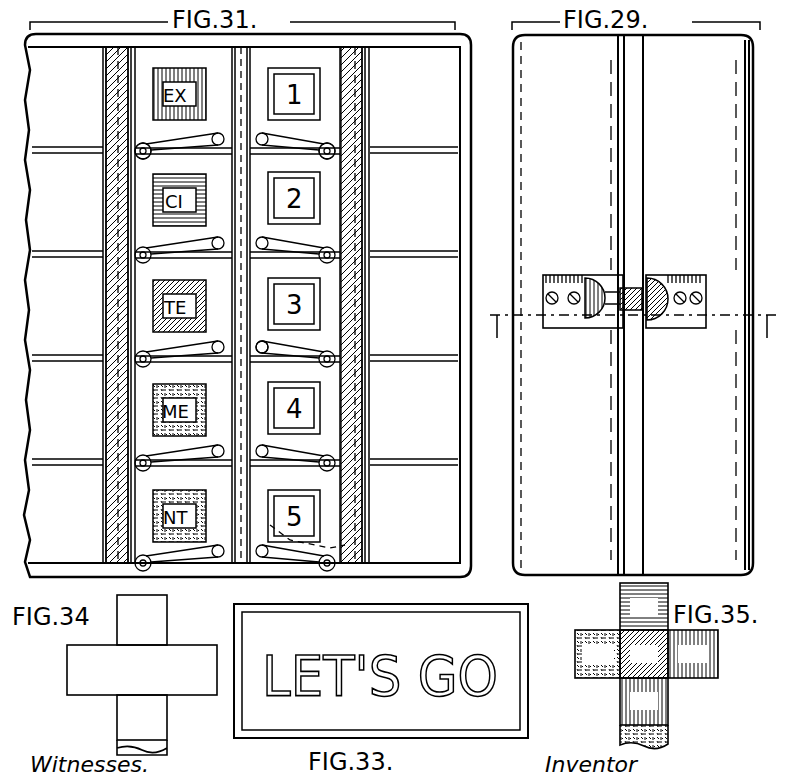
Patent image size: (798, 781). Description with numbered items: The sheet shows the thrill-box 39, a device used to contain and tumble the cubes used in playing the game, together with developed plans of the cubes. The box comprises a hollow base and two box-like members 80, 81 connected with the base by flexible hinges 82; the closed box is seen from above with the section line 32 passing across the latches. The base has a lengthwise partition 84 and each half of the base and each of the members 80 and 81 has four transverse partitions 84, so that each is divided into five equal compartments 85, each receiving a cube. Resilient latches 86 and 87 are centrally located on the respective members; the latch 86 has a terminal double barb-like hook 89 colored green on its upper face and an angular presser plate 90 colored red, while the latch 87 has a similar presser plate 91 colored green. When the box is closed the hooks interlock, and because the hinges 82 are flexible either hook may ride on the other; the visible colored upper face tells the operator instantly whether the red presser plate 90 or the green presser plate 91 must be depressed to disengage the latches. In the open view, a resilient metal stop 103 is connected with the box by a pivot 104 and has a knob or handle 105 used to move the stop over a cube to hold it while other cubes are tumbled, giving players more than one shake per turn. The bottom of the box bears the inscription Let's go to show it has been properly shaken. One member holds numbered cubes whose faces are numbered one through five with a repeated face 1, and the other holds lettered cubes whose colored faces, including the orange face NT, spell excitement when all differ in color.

In FIG. 34, the numbered face 1 is at (155, 747).
In FIG. 29, the section line 32 is at (637, 338).
In FIG. 29, the thrill-box 39 is at (598, 492).
In FIG. 31, the box-like member 80 is at (63, 572).
In FIG. 29, the box-like member 80 is at (590, 391).
In FIG. 31, the box-like member 81 is at (462, 298).
In FIG. 29, the box-like member 81 is at (707, 391).
In FIG. 31, the flexible hinge 82 is at (112, 88).
In FIG. 31, the partition 84 is at (52, 258).
In FIG. 31, the compartment 85 is at (57, 81).
In FIG. 29, the resilient latch 86 is at (566, 290).
In FIG. 29, the resilient latch 87 is at (688, 290).
In FIG. 29, the double barb-like hook 89 is at (633, 287).
In FIG. 29, the presser plate 90 is at (600, 320).
In FIG. 29, the presser plate 91 is at (656, 322).
In FIG. 31, the resilient metal stop 103 is at (166, 242).
In FIG. 31, the pivot 104 is at (335, 145).
In FIG. 31, the knob or handle 105 is at (348, 335).
In FIG. 35, the lettered face NT is at (670, 735).